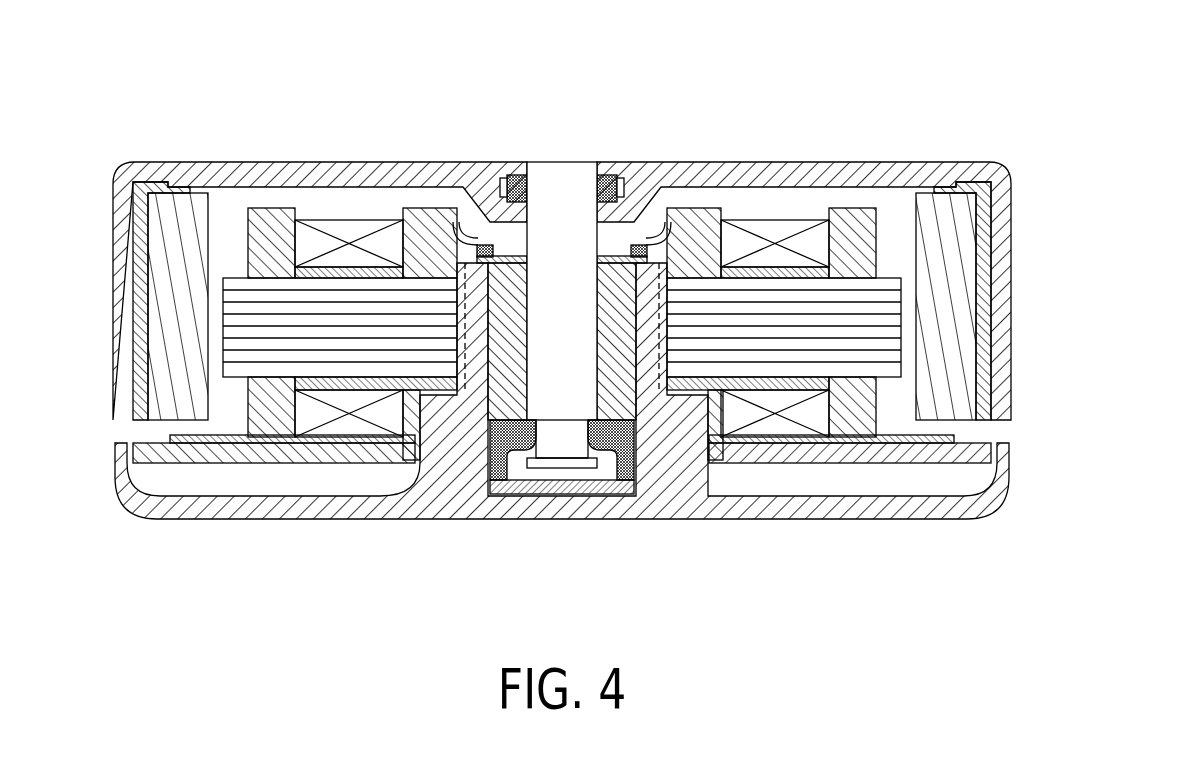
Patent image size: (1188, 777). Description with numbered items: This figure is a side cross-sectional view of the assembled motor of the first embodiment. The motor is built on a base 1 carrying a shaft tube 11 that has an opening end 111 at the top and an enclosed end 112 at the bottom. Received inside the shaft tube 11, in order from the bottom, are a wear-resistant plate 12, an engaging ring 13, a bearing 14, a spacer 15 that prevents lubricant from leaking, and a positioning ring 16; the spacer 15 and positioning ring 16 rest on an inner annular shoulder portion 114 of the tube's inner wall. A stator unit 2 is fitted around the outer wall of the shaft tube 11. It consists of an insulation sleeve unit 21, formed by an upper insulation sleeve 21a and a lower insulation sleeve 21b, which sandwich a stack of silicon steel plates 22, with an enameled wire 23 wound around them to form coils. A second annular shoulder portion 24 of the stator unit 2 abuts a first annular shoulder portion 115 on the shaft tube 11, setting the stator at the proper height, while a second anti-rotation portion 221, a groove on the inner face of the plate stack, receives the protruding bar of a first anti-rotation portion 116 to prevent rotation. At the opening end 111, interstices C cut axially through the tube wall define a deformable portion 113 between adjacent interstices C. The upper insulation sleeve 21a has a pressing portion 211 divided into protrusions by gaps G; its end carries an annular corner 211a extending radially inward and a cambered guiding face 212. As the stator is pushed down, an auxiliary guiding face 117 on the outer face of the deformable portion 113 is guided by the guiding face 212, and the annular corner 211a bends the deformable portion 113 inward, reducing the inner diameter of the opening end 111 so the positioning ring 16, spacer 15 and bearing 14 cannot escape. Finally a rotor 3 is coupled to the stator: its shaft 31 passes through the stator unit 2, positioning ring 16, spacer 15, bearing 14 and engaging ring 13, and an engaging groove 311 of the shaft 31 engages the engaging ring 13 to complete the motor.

The base 1 is at (897, 506).
The shaft tube 11 is at (700, 352).
The opening end 111 is at (485, 195).
The enclosed end 112 is at (636, 507).
The deformable portion 113 is at (457, 225).
The inner annular shoulder portion 114 is at (497, 245).
The first annular shoulder portion 115 is at (650, 360).
The first anti-rotation portion 116 is at (463, 345).
The auxiliary guiding face 117 is at (777, 57).
The wear-resistant plate 12 is at (527, 484).
The engaging ring 13 is at (492, 494).
The bearing 14 is at (420, 392).
The spacer 15 is at (597, 160).
The positioning ring 16 is at (627, 190).
The stator unit 2 is at (226, 225).
The insulation sleeve unit 21 is at (1110, 248).
The upper insulation sleeve 21a is at (867, 225).
The lower insulation sleeve 21b is at (867, 403).
The silicon steel plate 22 is at (230, 297).
The second anti-rotation portion 221 is at (478, 225).
The enameled wire 23 is at (807, 222).
The second annular shoulder portion 24 is at (438, 440).
The rotor 3 is at (782, 160).
The shaft 31 is at (585, 357).
The engaging groove 311 is at (572, 447).
The pressing portion 211 is at (668, 200).
The annular corner 211a is at (640, 205).
The guiding face 212 is at (720, 226).
The gap G is at (456, 206).
The interstice C is at (433, 185).